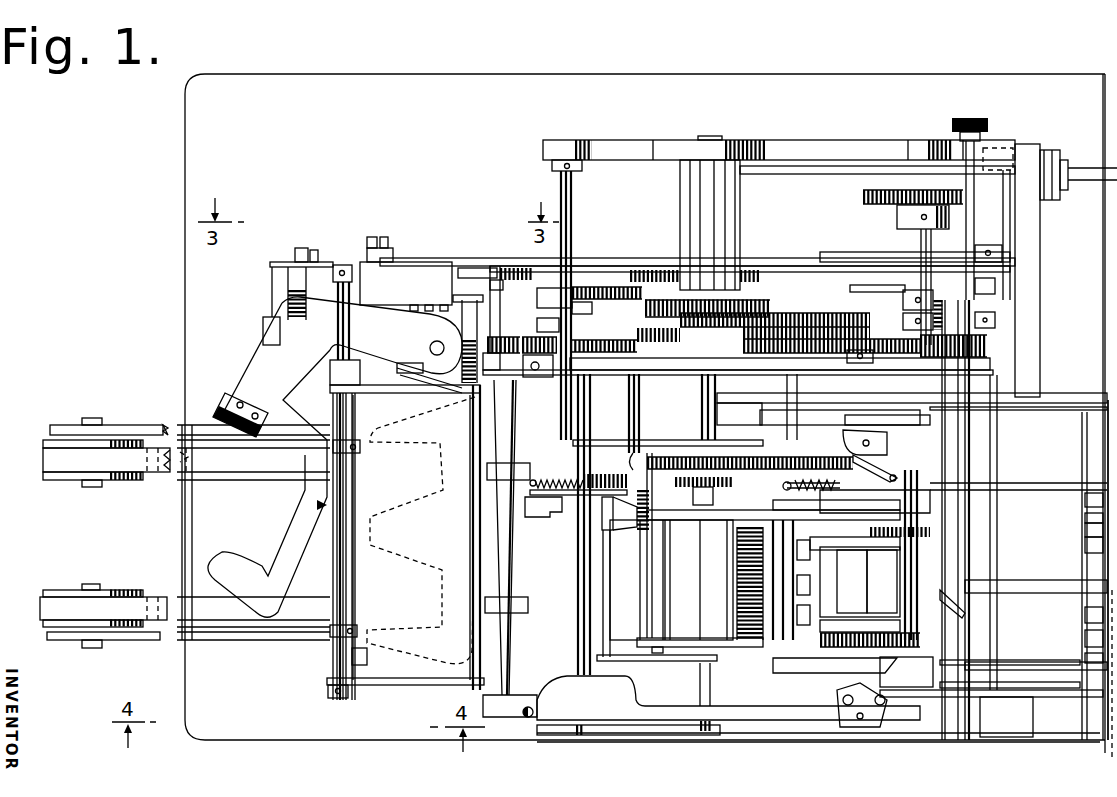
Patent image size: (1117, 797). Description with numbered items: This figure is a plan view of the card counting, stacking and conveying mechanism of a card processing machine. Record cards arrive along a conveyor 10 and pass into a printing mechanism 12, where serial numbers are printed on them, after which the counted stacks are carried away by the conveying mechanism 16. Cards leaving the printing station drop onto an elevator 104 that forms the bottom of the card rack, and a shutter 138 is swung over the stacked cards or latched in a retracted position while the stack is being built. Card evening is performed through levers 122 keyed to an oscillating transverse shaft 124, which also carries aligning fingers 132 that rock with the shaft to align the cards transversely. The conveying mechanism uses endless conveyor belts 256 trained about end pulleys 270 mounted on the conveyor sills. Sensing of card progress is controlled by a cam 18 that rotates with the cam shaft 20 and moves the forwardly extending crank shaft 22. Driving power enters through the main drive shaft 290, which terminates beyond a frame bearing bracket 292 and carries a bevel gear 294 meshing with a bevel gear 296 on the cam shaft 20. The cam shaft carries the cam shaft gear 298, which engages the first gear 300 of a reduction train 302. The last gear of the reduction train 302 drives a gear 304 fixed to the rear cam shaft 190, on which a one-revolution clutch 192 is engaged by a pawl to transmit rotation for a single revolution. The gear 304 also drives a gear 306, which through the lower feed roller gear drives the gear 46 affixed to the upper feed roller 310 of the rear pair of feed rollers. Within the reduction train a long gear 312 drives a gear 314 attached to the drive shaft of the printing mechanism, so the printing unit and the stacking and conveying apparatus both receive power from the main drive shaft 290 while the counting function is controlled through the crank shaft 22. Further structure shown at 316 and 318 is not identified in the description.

The conveyor 10 is at (1086, 698).
The printing mechanism 12 is at (690, 570).
The conveying mechanism 16 is at (120, 408).
The cam 18 is at (857, 290).
The cam shaft 20 is at (920, 240).
The crank shaft 22 is at (821, 253).
The gear 46 is at (512, 352).
The elevator 104 is at (400, 562).
The levers 122 is at (355, 690).
The transverse shaft 124 is at (357, 448).
The aligning fingers 132 is at (360, 628).
The shutter 138 is at (262, 358).
The rear cam shaft 190 is at (598, 318).
The one-revolution clutch 192 is at (557, 306).
The conveyor belts 256 is at (226, 462).
The pulleys 270 is at (80, 590).
The main drive shaft 290 is at (1099, 166).
The frame bearing bracket 292 is at (1043, 150).
The bevel gear 294 is at (994, 156).
The bevel gear 296 is at (862, 196).
The cam shaft gear 298 is at (988, 345).
The first gear 300 is at (777, 350).
The reduction train 302 is at (815, 300).
The gear 304 is at (623, 360).
The gear 306 is at (548, 372).
The upper feed roller 310 is at (503, 405).
The long gear 312 is at (680, 186).
The gear 314 is at (750, 310).
The housing 316 is at (470, 268).
The bracket 318 is at (520, 268).